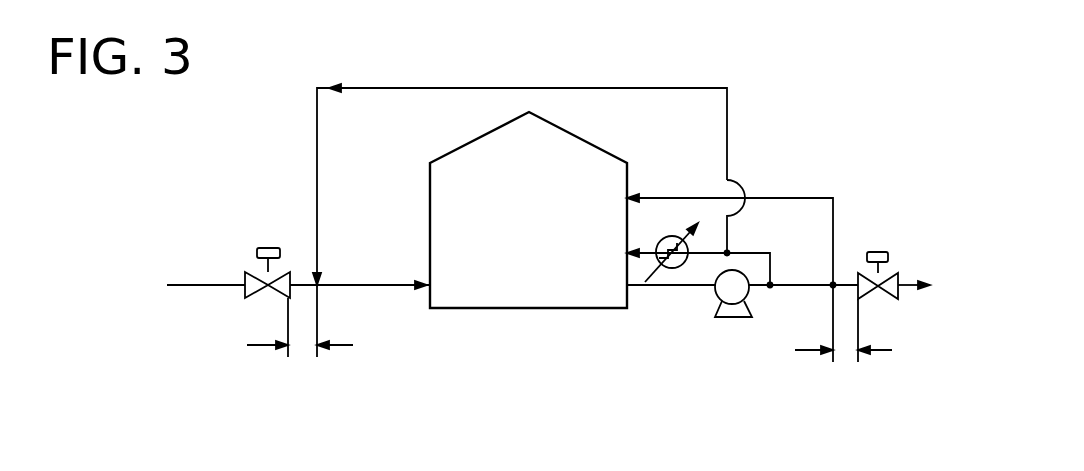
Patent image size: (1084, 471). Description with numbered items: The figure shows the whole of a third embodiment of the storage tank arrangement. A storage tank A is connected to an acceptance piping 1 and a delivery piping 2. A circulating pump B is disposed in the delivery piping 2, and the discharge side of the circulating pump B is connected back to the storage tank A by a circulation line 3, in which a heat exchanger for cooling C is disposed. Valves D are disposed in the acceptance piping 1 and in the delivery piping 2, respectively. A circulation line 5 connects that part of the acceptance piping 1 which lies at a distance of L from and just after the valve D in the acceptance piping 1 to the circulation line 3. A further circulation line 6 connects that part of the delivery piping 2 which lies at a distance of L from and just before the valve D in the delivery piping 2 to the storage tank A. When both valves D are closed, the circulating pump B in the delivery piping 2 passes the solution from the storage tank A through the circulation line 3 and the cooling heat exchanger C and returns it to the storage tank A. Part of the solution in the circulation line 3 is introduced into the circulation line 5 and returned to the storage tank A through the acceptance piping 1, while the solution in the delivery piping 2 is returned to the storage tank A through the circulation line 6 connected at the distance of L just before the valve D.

The acceptance piping 1 is at (388, 287).
The delivery piping 2 is at (773, 288).
The circulation line 3 is at (720, 252).
The circulation line 5 is at (603, 88).
The circulation line 6 is at (810, 198).
The storage tank A is at (528, 210).
The circulating pump B is at (724, 318).
The heat exchanger for cooling C is at (680, 268).
The valve D is at (255, 249).
The distance L is at (569, 344).